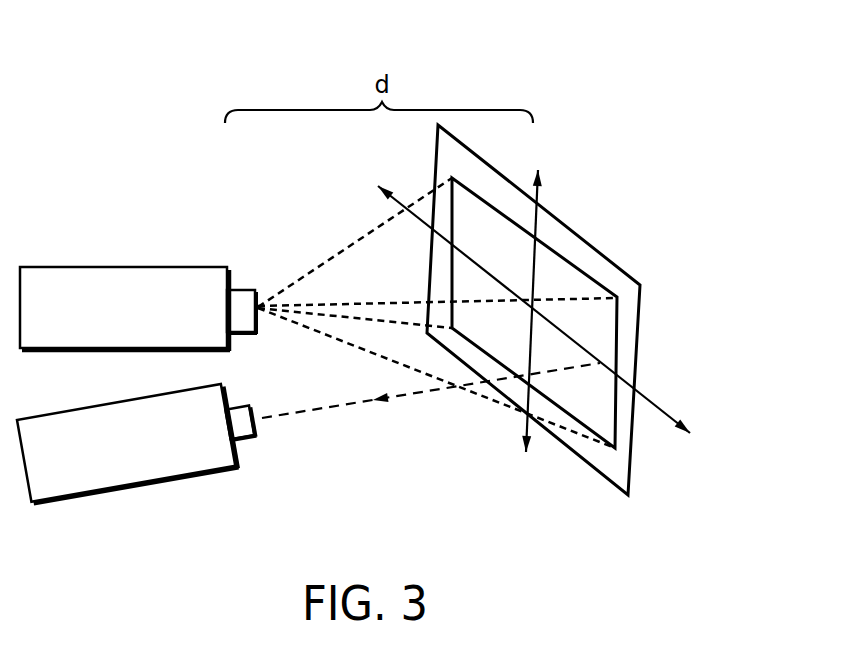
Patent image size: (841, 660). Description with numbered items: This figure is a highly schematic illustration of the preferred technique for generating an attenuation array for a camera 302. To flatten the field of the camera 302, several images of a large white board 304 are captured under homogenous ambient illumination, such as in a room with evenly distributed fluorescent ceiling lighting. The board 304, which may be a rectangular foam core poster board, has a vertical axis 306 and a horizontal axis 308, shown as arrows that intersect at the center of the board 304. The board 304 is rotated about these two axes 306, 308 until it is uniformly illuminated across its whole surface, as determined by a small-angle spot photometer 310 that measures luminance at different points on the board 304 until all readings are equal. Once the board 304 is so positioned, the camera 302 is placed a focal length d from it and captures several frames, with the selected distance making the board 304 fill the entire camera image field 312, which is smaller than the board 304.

The camera 302 is at (125, 267).
The white board 304 is at (630, 270).
The vertical axis 306 is at (542, 199).
The horizontal axis 308 is at (668, 414).
The spot photometer 310 is at (119, 488).
The camera image field 312 is at (617, 326).